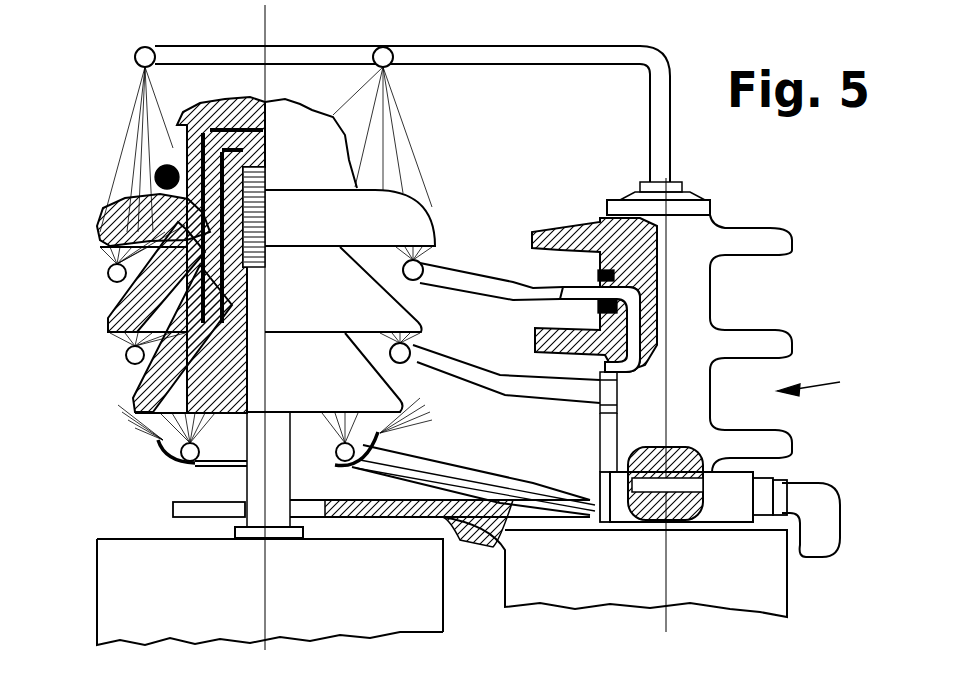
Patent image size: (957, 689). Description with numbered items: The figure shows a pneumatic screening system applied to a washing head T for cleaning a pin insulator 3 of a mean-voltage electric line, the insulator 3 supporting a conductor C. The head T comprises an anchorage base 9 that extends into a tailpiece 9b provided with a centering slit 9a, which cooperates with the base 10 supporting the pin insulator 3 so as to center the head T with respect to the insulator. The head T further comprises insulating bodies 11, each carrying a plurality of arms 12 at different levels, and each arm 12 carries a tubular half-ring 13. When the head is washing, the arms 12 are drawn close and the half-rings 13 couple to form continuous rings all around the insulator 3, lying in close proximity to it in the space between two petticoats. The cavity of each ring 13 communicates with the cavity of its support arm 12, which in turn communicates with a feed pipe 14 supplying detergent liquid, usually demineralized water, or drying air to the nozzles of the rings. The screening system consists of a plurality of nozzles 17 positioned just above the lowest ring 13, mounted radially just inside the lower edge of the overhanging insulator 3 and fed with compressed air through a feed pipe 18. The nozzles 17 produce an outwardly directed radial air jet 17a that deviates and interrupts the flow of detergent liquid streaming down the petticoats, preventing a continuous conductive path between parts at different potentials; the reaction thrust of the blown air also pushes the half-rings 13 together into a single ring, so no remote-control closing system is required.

The pin insulator 3 is at (362, 228).
The anchorage base 9 is at (513, 553).
The centering slit 9a is at (200, 497).
The tailpiece 9b is at (410, 510).
The base 10 is at (285, 485).
The insulating body 11 is at (705, 297).
The arm 12 is at (530, 62).
The tubular half-ring 13 is at (143, 47).
The feed pipe 14 is at (420, 300).
The nozzle 17 is at (157, 438).
The outwardly directed jet 17a is at (420, 398).
The feed pipe 18 is at (233, 473).
The conductor C is at (155, 176).
The washing head T is at (811, 376).